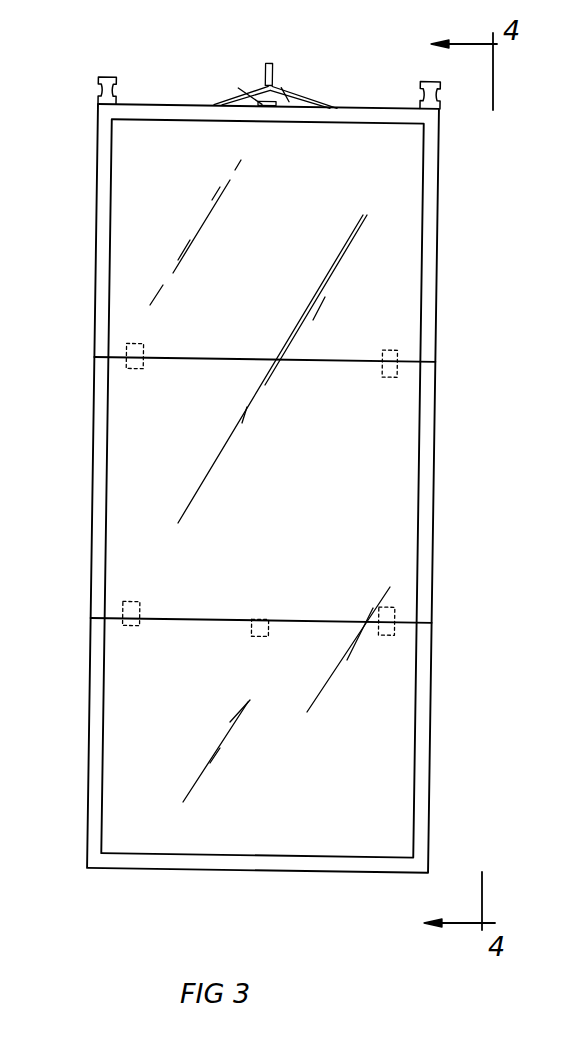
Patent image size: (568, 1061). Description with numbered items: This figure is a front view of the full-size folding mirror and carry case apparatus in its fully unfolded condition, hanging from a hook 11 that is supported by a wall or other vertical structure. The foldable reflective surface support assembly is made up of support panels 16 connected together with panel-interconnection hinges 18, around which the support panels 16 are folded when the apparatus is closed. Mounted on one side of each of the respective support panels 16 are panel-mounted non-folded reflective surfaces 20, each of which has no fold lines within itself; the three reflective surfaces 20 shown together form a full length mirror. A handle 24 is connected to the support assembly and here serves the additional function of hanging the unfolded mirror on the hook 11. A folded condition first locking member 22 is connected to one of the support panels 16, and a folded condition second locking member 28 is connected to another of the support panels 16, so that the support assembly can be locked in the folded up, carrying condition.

The hook 11 is at (262, 71).
The support panels 16 is at (431, 270).
The panel-interconnection hinges 18 is at (136, 371).
The panel-mounted non-folded reflective surfaces 20 is at (367, 180).
The folded condition first locking member 22 is at (255, 636).
The handle 24 is at (305, 99).
The folded condition second locking member 28 is at (248, 90).